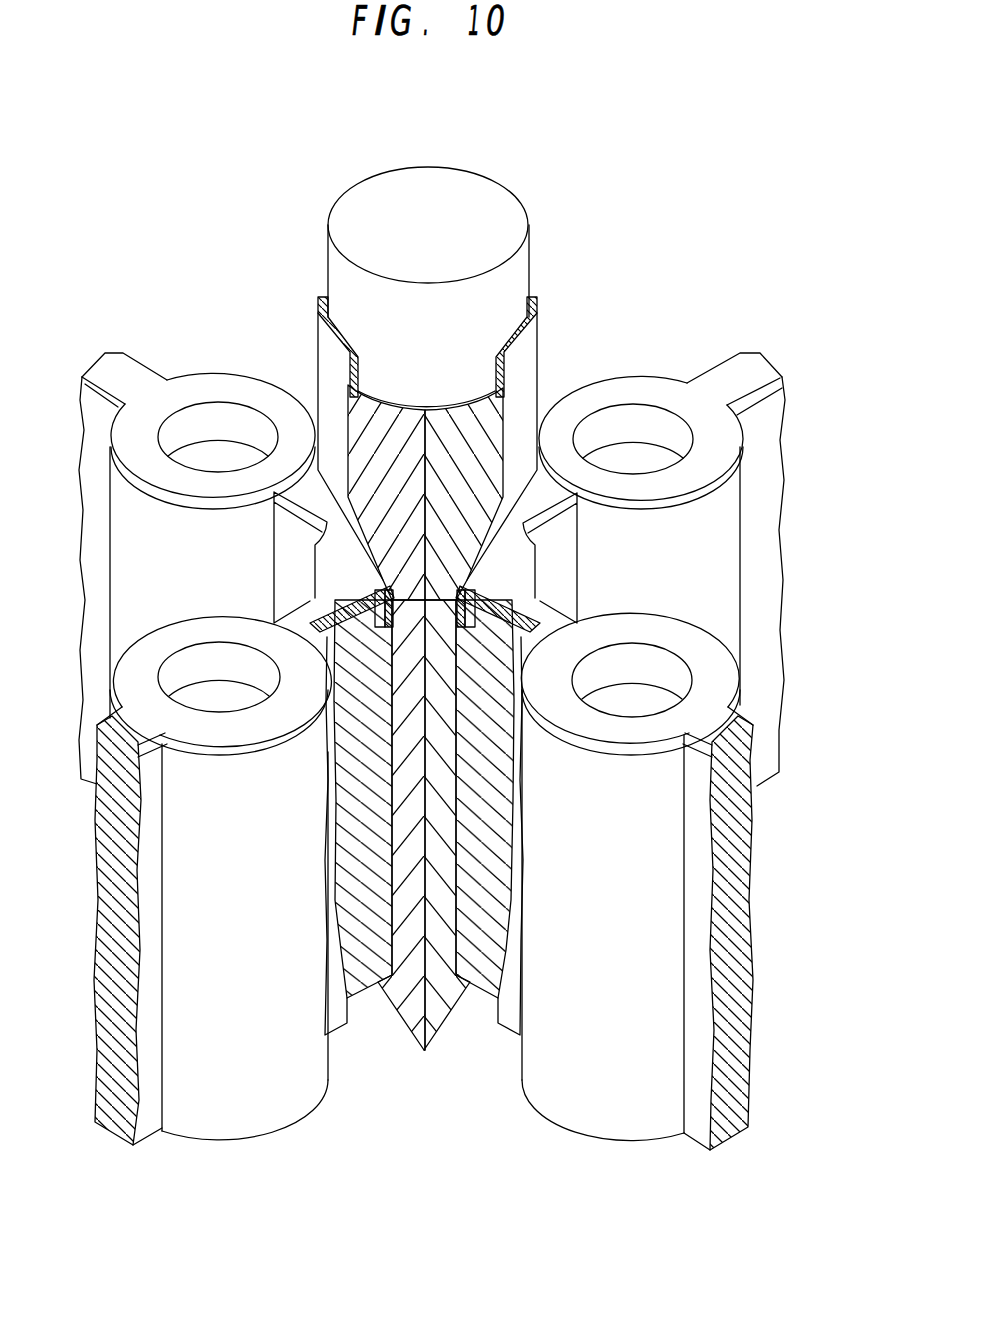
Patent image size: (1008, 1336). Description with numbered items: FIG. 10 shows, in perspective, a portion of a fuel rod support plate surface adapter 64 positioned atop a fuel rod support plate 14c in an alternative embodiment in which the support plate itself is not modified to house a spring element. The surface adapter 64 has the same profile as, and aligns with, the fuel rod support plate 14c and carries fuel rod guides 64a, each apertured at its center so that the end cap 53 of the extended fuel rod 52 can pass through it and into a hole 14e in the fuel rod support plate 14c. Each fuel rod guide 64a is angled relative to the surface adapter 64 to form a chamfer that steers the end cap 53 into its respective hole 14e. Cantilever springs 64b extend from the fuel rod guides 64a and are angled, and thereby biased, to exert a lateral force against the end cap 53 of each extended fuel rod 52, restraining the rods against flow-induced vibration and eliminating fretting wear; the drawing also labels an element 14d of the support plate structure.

The extended fuel rod 52 is at (325, 358).
The end cap 53 is at (317, 468).
The fuel rod support plate surface adapter 64 is at (735, 367).
The fuel rod guide 64a is at (655, 668).
The cantilever spring 64b is at (194, 458).
The fuel rod support plate 14c is at (762, 486).
The front cylindrical tube 14d is at (562, 1091).
The hole 14e is at (203, 690).